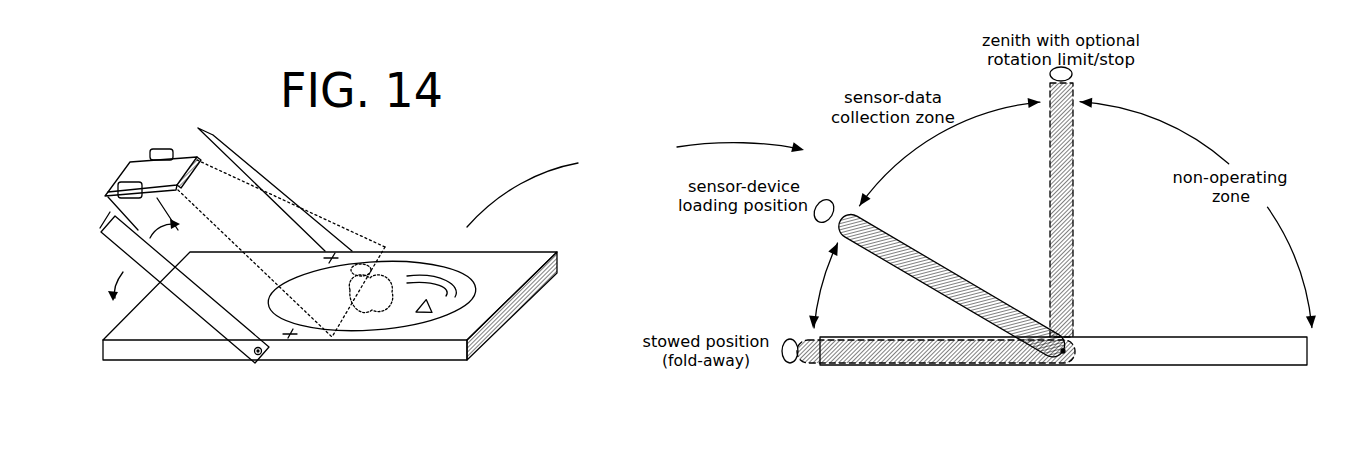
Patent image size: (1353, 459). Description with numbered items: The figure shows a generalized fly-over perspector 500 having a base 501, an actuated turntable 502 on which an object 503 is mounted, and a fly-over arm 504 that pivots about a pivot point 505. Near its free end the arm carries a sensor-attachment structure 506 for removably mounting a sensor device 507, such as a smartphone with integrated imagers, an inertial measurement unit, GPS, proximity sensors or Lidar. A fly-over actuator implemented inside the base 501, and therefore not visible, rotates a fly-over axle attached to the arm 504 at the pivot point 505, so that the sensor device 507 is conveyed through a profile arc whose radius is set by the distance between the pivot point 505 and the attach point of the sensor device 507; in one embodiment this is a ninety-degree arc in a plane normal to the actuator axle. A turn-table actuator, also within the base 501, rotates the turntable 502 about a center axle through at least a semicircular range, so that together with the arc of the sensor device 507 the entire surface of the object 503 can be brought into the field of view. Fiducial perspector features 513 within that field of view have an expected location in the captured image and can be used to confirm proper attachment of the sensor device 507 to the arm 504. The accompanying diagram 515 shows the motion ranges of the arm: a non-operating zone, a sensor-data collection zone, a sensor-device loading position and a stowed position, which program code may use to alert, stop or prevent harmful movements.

The fly-over perspector 500 is at (412, 187).
The base 501 is at (486, 253).
The actuated turntable 502 is at (275, 303).
The object 503 is at (350, 300).
The fly-over arm 504 is at (120, 236).
The pivot point 505 is at (256, 357).
The sensor-attachment structure 506 is at (150, 150).
The sensor device 507 is at (128, 173).
The fiducial perspector features 513 is at (292, 342).
The zones and positions diagram 515 is at (635, 184).